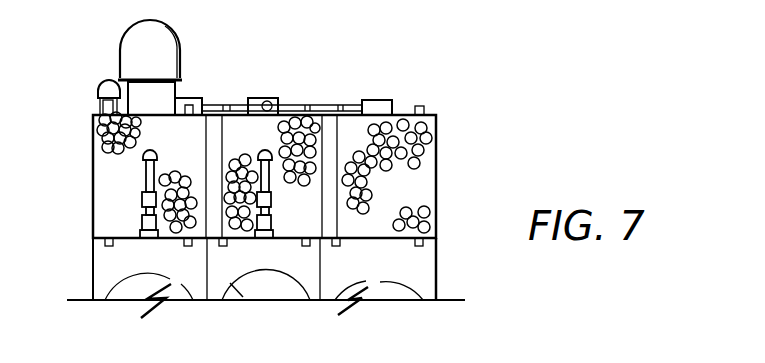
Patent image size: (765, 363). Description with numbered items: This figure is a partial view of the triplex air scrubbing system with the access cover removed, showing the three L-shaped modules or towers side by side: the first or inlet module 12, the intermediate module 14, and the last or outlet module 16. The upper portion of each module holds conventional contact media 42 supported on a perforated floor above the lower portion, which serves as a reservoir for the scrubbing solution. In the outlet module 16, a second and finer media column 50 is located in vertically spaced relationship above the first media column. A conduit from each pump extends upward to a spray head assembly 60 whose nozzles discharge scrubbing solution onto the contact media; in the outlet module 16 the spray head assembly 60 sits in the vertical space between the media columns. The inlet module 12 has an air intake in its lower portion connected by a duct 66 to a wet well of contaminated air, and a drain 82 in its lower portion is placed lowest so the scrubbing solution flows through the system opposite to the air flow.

The first or inlet module 12 is at (88, 170).
The intermediate module 14 is at (305, 100).
The outlet module 16 is at (413, 78).
The contact media 42 is at (142, 128).
The second media column 50 is at (421, 166).
The spray head assembly 60 is at (140, 162).
The duct 66 is at (173, 42).
The drain 82 is at (95, 104).